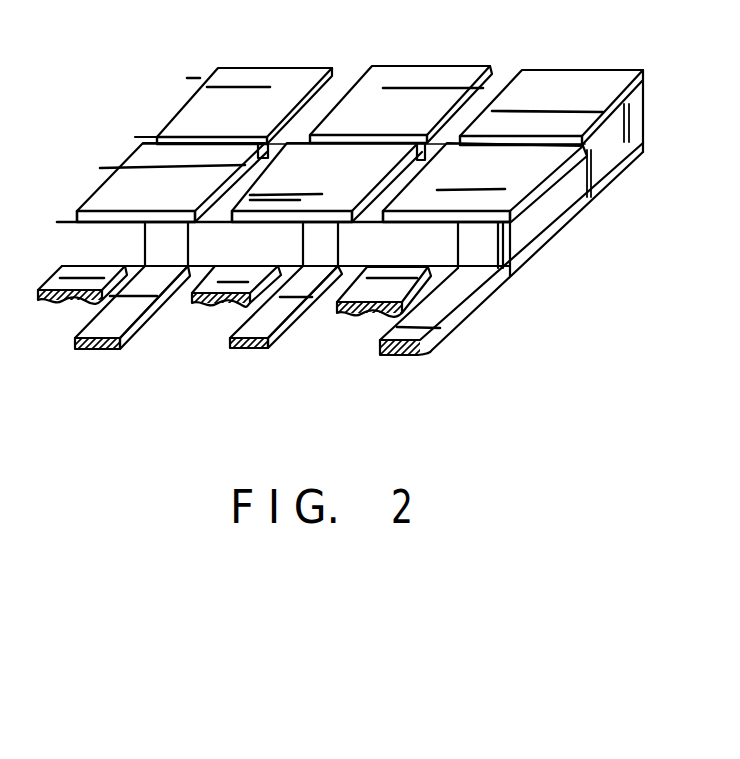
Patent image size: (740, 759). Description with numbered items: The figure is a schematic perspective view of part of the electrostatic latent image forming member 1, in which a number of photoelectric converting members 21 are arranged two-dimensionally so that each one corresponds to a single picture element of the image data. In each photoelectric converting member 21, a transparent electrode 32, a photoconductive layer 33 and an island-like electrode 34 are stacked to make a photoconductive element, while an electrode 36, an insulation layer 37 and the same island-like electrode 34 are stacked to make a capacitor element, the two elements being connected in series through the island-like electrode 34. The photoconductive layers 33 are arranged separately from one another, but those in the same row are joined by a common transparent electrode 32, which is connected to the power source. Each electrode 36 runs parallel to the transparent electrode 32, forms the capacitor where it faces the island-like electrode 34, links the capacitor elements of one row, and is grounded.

The electrostatic latent image forming member 1 is at (90, 135).
The photoelectric converting member 21 is at (594, 58).
The transparent electrode 32 is at (632, 156).
The photoconductive layer 33 is at (578, 192).
The island-like electrode 34 is at (304, 72).
The electrode 36 is at (68, 287).
The insulation layer 37 is at (638, 118).